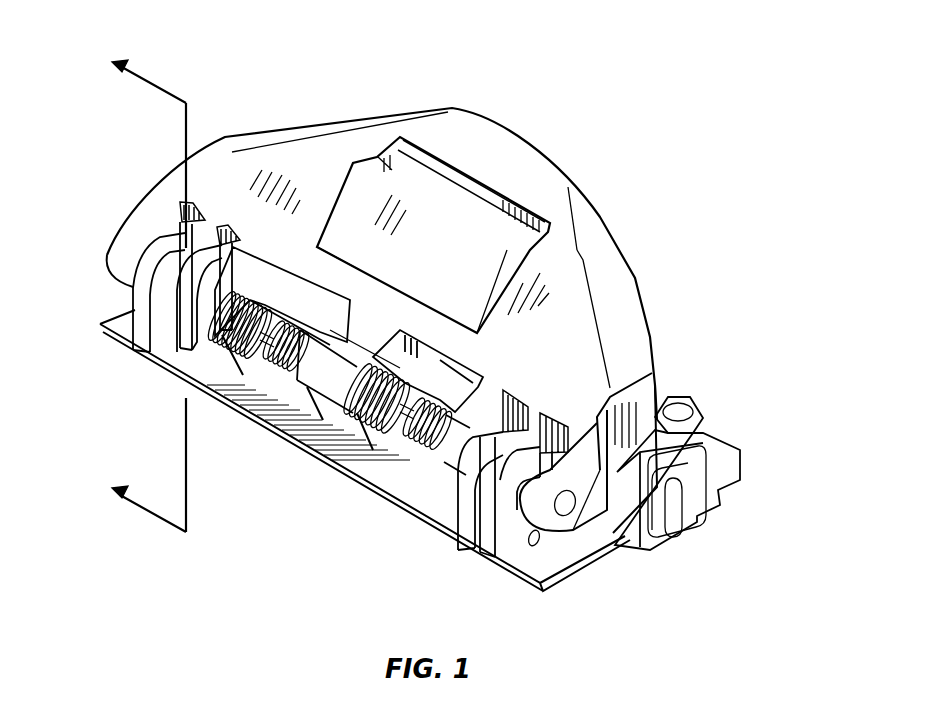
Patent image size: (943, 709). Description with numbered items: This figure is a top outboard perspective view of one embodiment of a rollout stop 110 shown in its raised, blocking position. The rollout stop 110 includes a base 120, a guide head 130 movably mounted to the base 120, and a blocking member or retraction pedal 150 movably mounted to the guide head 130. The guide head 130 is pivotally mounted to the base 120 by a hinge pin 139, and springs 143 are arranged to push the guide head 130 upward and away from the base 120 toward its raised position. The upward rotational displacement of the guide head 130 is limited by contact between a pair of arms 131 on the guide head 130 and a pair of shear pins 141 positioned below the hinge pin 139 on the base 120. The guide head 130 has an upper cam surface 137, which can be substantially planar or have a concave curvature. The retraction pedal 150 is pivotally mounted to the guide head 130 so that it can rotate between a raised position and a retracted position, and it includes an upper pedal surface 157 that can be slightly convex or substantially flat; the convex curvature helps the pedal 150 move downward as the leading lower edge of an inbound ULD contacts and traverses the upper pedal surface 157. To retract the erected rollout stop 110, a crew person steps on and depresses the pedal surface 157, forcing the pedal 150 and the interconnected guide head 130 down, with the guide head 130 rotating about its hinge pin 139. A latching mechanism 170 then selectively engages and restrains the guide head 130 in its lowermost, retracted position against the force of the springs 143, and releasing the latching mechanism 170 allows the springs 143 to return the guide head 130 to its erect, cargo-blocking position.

The rollout stop 110 is at (659, 153).
The base 120 is at (365, 490).
The guide head 130 is at (650, 337).
The arms 131 is at (160, 325).
The upper cam surface 137 is at (560, 287).
The hinge pin 139 is at (568, 510).
The shear pins 141 is at (538, 548).
The springs 143 is at (197, 373).
The retraction pedal 150 is at (342, 187).
The upper pedal surface 157 is at (428, 215).
The latching mechanism 170 is at (687, 493).